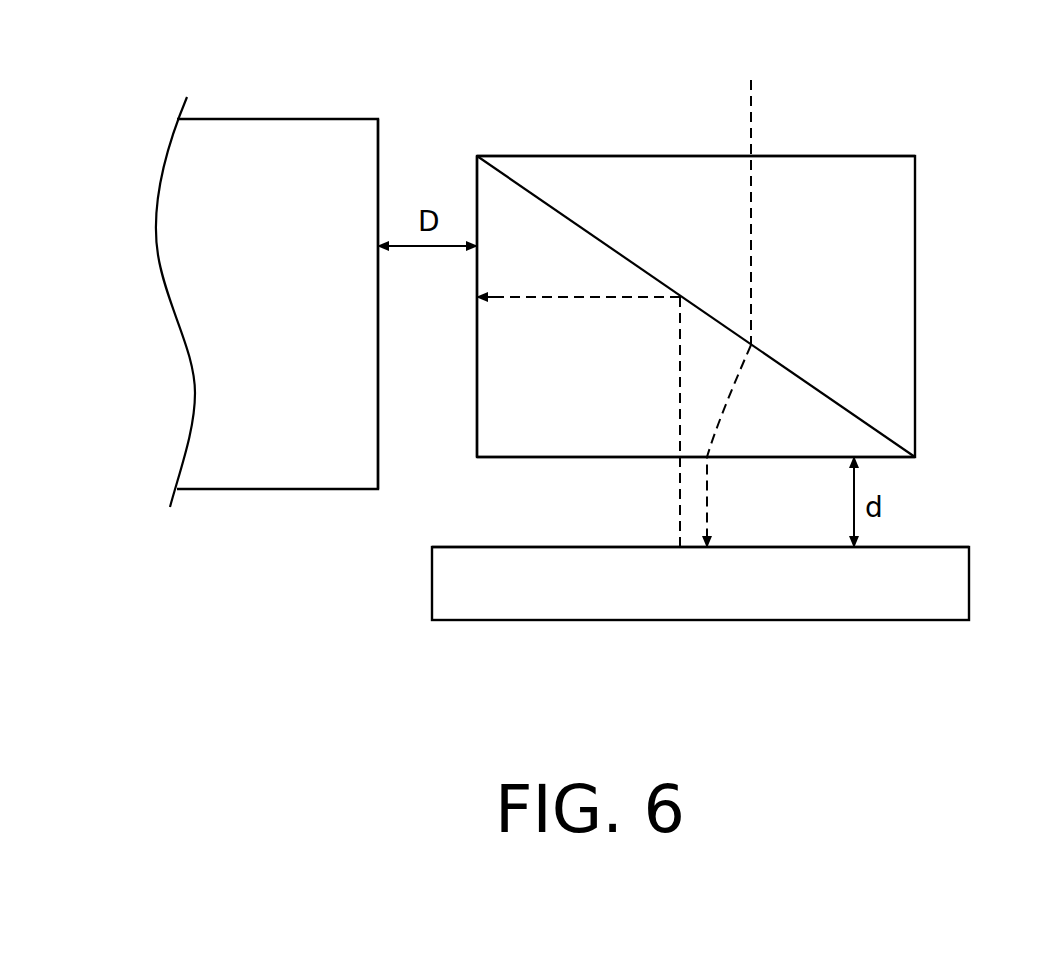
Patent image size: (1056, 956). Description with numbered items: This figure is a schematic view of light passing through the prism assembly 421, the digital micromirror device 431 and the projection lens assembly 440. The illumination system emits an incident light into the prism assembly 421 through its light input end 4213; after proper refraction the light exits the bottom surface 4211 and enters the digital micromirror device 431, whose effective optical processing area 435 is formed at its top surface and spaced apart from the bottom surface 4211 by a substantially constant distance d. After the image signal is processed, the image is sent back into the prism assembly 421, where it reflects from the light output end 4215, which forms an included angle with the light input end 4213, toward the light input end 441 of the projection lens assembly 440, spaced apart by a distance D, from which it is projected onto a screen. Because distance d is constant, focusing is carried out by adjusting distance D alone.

The projection lens assembly 440 is at (258, 119).
The light input end 441 is at (378, 147).
The prism assembly 421 is at (888, 243).
The light input end 4213 is at (850, 155).
The light output end 4215 is at (477, 405).
The bottom surface 4211 is at (890, 460).
The digital micromirror device 431 is at (945, 620).
The effective optical processing area 435 is at (943, 547).